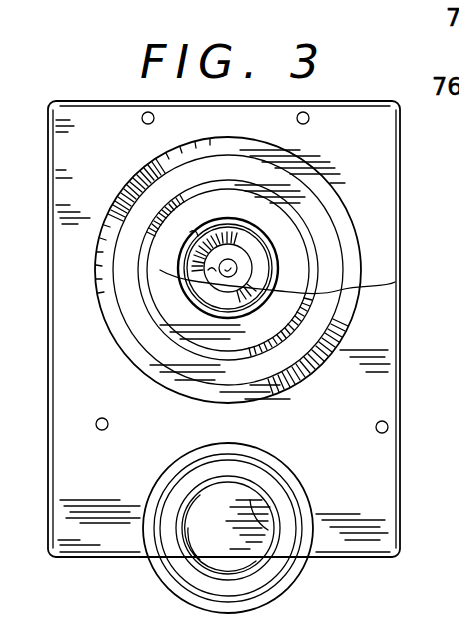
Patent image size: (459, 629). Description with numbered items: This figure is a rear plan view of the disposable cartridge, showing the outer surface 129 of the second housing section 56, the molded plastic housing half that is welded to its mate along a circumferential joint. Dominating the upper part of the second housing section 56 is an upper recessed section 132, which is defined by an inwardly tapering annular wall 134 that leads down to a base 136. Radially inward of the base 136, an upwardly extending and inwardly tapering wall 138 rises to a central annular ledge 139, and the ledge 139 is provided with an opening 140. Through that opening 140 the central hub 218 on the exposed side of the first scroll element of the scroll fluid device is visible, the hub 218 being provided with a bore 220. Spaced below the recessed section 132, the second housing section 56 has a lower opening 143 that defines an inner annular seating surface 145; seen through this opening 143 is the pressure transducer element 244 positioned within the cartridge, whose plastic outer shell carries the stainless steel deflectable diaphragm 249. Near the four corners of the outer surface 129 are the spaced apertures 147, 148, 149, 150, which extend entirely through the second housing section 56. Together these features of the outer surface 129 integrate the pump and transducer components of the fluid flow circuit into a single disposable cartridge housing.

The second housing section 56 is at (407, 190).
The spaced aperture 147 is at (142, 120).
The spaced aperture 148 is at (310, 118).
The spaced aperture 149 is at (388, 432).
The spaced aperture 150 is at (108, 430).
The upper recessed section 132 is at (310, 178).
The bore 220 is at (212, 273).
The base 136 is at (330, 265).
The inwardly tapering wall 138 is at (313, 249).
The annular wall 134 is at (340, 330).
The central hub 218 is at (423, 284).
The central annular ledge 139 is at (190, 320).
The outer surface 129 is at (303, 420).
The opening 140 is at (193, 236).
The lower opening 143 is at (297, 478).
The annular seating surface 145 is at (308, 540).
The pressure transducer element 244 is at (180, 577).
The deflectable diaphragm 249 is at (270, 570).